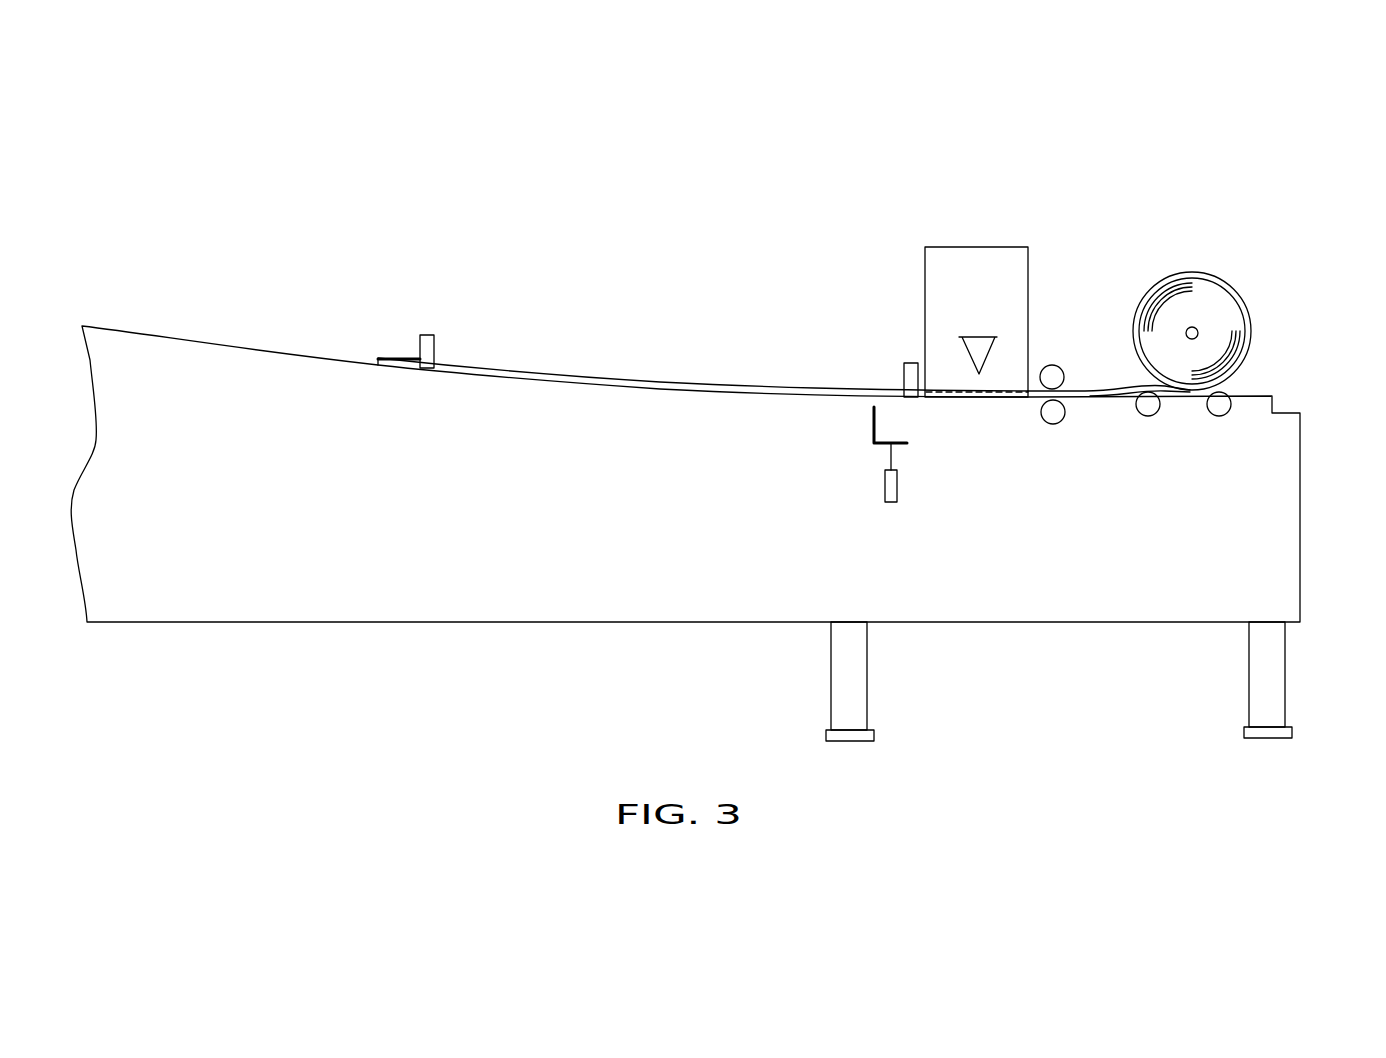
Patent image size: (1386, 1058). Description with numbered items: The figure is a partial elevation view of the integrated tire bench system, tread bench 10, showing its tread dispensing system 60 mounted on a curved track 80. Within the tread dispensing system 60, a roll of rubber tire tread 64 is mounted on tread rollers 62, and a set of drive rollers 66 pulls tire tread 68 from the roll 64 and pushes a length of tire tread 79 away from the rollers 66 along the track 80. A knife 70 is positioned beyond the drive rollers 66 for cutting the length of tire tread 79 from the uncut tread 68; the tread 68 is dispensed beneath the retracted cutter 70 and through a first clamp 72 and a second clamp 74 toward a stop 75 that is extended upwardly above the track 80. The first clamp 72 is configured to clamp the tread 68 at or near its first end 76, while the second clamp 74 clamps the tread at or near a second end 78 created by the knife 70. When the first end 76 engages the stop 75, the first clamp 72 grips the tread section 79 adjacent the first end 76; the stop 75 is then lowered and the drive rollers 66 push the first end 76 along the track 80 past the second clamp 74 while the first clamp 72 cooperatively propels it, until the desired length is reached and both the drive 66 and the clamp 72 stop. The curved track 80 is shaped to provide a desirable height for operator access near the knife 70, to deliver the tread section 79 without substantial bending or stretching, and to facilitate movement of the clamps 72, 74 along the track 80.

The tread bench 10 is at (723, 424).
The tread dispensing system 60 is at (1208, 315).
The tread rollers 62 is at (1150, 417).
The roll of rubber tire tread 64 is at (1230, 290).
The drive rollers 66 is at (1052, 365).
The tire tread 68 is at (1088, 398).
The knife 70 is at (991, 347).
The first clamp 72 is at (428, 335).
The second clamp 74 is at (900, 378).
The stop 75 is at (872, 419).
The first end 76 is at (378, 358).
The second end 78 is at (978, 397).
The length of tire tread 79 is at (640, 380).
The curved track 80 is at (260, 352).